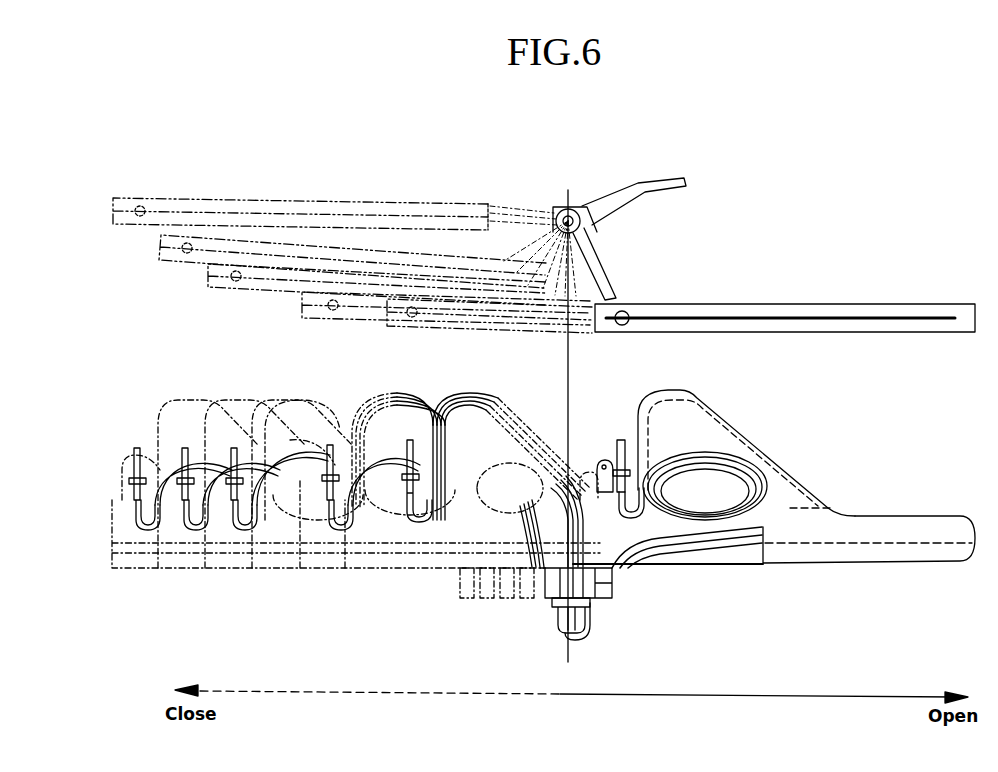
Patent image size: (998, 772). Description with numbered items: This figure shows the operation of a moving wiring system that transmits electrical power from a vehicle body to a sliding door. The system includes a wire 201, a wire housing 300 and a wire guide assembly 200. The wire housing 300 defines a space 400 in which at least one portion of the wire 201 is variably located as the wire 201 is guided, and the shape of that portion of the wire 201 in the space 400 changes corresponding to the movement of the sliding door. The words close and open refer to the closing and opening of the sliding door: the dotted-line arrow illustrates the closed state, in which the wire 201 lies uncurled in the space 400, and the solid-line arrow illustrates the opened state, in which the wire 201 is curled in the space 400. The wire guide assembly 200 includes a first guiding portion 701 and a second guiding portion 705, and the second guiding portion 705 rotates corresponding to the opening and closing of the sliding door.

The wire guide assembly 200 is at (576, 196).
The wire 201 is at (406, 396).
The wire housing 300 is at (897, 334).
The space 400 is at (716, 400).
The first guiding portion 701 is at (658, 188).
The second guiding portion 705 is at (510, 208).